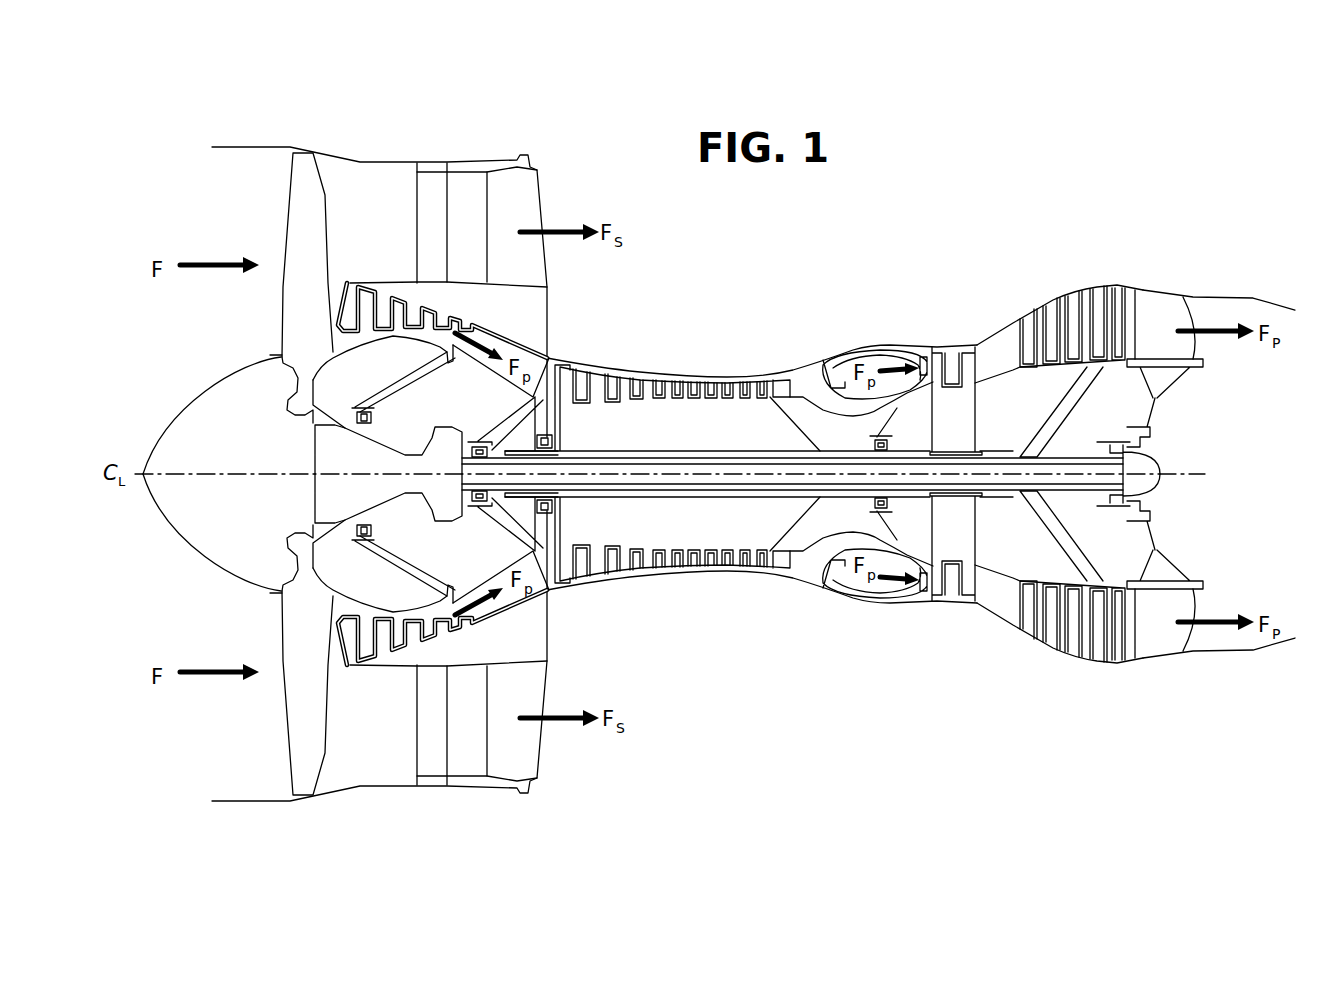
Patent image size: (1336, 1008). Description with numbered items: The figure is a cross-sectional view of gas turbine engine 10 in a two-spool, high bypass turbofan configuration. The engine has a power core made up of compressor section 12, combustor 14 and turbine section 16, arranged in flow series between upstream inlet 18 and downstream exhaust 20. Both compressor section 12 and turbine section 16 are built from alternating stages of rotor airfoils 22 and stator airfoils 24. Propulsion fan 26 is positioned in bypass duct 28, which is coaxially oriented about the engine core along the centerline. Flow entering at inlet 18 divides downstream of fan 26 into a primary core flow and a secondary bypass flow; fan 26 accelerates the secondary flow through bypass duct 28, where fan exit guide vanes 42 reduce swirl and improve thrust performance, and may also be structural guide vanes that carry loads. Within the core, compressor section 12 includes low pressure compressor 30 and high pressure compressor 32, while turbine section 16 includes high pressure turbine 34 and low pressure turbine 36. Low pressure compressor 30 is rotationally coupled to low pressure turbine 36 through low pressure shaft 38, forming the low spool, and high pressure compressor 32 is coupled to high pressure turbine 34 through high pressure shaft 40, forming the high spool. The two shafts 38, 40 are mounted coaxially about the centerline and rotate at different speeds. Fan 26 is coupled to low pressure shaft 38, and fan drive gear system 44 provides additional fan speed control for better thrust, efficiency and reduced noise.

The gas turbine engine 10 is at (188, 121).
The compressor section 12 is at (781, 812).
The combustor 14 is at (883, 350).
The turbine section 16 is at (1133, 703).
The upstream inlet 18 is at (212, 462).
The downstream exhaust 20 is at (1215, 474).
The rotor airfoils 22 is at (600, 372).
The stator airfoils 24 is at (636, 380).
The propulsion fan 26 is at (303, 230).
The bypass duct 28 is at (448, 474).
The low pressure compressor 30 is at (505, 626).
The high pressure compressor 32 is at (678, 585).
The high pressure turbine 34 is at (960, 608).
The low pressure turbine 36 is at (1026, 658).
The low pressure shaft 38 is at (713, 484).
The high pressure shaft 40 is at (790, 508).
The fan exit guide vanes 42 is at (427, 180).
The fan drive gear system 44 is at (450, 423).